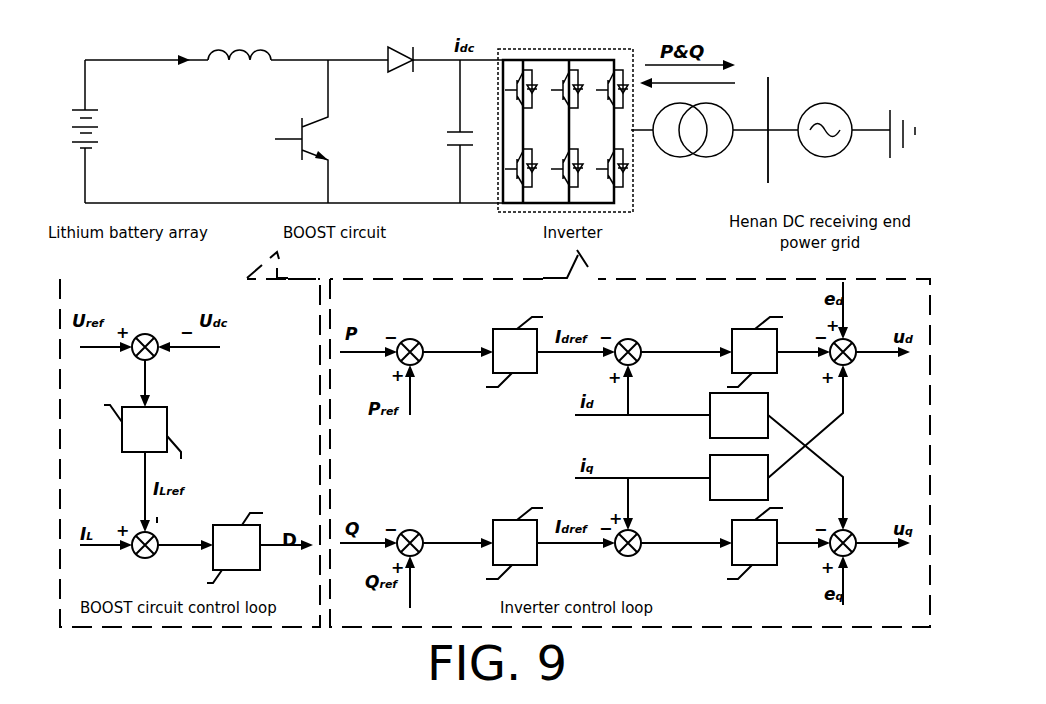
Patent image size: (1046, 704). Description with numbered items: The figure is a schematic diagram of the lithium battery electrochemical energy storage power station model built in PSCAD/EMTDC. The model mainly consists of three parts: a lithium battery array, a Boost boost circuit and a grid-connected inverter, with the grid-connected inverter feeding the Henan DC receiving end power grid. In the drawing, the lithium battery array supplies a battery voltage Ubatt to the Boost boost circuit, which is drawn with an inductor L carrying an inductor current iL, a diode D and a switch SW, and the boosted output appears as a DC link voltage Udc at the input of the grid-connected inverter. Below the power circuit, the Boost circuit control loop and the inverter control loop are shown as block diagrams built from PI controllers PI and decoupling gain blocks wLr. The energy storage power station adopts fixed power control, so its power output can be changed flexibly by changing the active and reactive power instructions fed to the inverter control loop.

The boost inductor L is at (239, 41).
The inductor current iL is at (171, 50).
The boost diode D is at (400, 46).
The boost switch transistor SW is at (326, 131).
The lithium battery array voltage Ubatt is at (130, 131).
The DC link capacitor voltage Udc is at (440, 131).
The PI controller with saturation PI is at (443, 450).
The decoupling gain block wLr is at (739, 446).